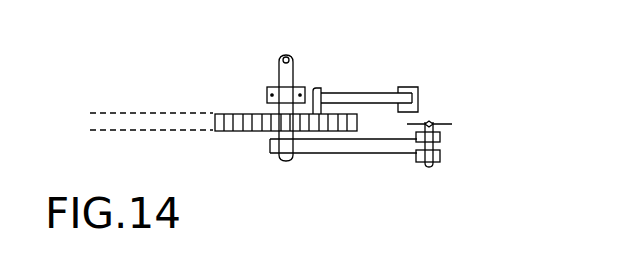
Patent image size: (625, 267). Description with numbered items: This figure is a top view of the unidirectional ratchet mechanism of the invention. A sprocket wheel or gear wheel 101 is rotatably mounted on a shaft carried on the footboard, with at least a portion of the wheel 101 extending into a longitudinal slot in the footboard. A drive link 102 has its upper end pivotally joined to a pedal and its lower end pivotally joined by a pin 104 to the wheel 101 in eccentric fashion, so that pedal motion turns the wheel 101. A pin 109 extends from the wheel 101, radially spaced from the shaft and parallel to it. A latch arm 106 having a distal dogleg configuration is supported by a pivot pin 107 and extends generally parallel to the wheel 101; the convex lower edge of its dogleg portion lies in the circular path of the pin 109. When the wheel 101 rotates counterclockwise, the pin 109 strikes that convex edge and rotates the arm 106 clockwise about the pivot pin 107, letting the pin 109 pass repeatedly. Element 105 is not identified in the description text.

The sprocket wheel or gear wheel 101 is at (230, 113).
The drive link 102 is at (360, 153).
The pin 104 is at (282, 155).
The pin 105 is at (437, 162).
The latch arm 106 is at (372, 92).
The pivot pin 107 is at (413, 88).
The pin 109 is at (318, 90).